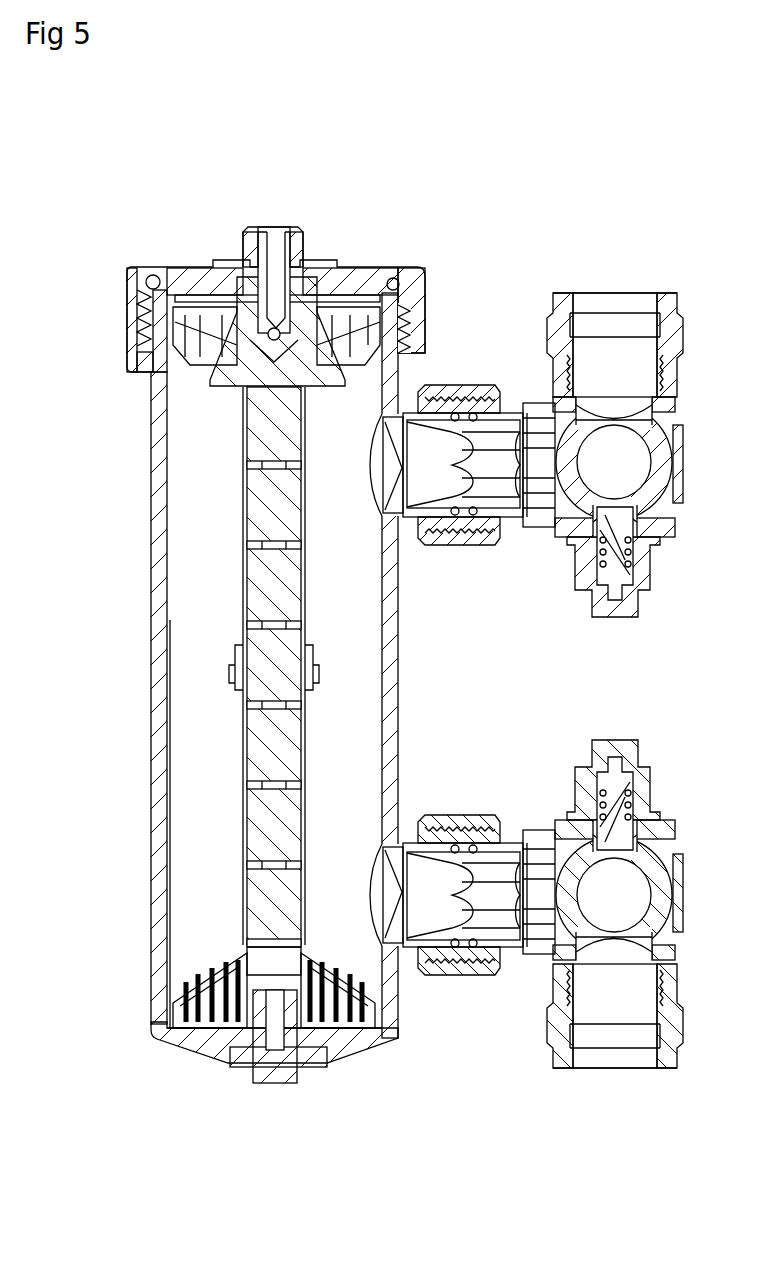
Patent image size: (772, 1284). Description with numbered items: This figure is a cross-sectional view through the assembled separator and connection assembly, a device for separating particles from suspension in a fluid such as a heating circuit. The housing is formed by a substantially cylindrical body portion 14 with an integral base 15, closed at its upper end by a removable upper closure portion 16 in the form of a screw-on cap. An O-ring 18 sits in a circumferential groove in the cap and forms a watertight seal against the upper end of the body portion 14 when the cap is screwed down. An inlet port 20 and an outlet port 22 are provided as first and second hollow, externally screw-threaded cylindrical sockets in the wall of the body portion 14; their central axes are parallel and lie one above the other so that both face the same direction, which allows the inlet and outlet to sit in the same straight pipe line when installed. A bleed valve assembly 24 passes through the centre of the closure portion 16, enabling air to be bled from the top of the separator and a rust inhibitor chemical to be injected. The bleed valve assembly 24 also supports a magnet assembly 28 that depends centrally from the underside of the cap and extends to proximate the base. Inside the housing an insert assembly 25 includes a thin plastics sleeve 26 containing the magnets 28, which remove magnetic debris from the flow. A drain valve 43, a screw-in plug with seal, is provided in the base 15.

The body portion 14 is at (166, 586).
The base 15 is at (342, 1038).
The upper closure portion 16 is at (343, 276).
The O-ring 18 is at (393, 282).
The inlet port 20 is at (432, 414).
The outlet port 22 is at (432, 844).
The bleed valve assembly 24 is at (277, 265).
The insert assembly 25 is at (244, 731).
The sleeve 26 is at (303, 585).
The magnet assembly 28 is at (278, 769).
The drain valve 43 is at (278, 1055).